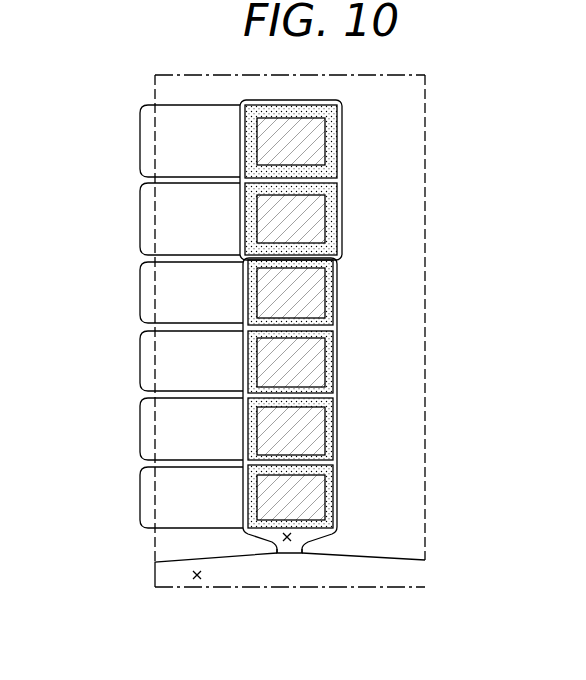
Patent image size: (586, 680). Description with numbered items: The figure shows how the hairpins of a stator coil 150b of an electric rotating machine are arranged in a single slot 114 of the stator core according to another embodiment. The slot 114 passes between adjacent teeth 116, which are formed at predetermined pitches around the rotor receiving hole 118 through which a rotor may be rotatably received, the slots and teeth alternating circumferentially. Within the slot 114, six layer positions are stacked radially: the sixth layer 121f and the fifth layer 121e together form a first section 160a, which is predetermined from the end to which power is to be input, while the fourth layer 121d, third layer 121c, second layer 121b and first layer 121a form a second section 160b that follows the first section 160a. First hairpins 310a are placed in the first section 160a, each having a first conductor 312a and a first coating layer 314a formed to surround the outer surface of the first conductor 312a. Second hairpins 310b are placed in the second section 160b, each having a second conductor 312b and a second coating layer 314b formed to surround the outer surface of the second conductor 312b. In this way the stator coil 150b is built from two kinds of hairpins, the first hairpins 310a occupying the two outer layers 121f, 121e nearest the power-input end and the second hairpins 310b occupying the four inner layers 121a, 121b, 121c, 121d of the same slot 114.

The stator coil 150b is at (180, 89).
The first section 160a is at (178, 180).
The second section 160b is at (176, 394).
The first layer 121a is at (209, 496).
The second layer 121b is at (137, 415).
The third layer 121c is at (137, 348).
The fourth layer 121d is at (137, 283).
The fifth layer 121e is at (211, 219).
The sixth layer 121f is at (137, 130).
The first hairpin 310a is at (395, 180).
The first conductor 312a is at (295, 210).
The first coating layer 314a is at (330, 217).
The second hairpin 310b is at (396, 393).
The second conductor 312b is at (312, 480).
The second coating layer 314b is at (252, 293).
The slot 114 is at (281, 536).
The tooth 116 is at (338, 553).
The rotor receiving hole 118 is at (196, 582).